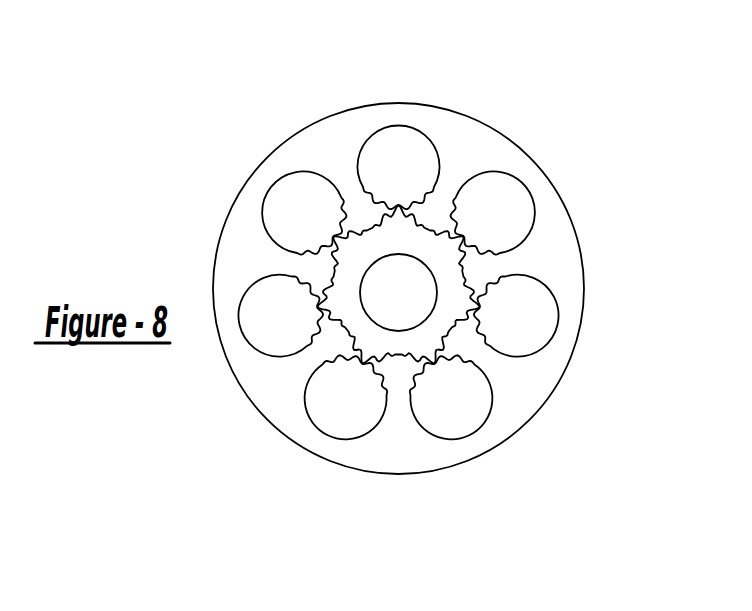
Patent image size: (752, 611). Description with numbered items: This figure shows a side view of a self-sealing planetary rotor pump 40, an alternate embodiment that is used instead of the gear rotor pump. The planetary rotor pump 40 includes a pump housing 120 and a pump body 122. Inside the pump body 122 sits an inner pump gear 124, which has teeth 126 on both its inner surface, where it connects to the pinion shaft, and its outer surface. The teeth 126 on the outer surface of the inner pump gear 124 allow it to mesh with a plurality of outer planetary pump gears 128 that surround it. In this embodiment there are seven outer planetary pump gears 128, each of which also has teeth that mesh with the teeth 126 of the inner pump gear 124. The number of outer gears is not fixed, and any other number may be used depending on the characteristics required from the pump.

The planetary rotor pump 40 is at (578, 222).
The pump housing 120 is at (347, 108).
The pump body 122 is at (520, 392).
The inner pump gear 124 is at (438, 293).
The teeth 126 is at (427, 432).
The outer planetary pump gears 128 is at (417, 158).